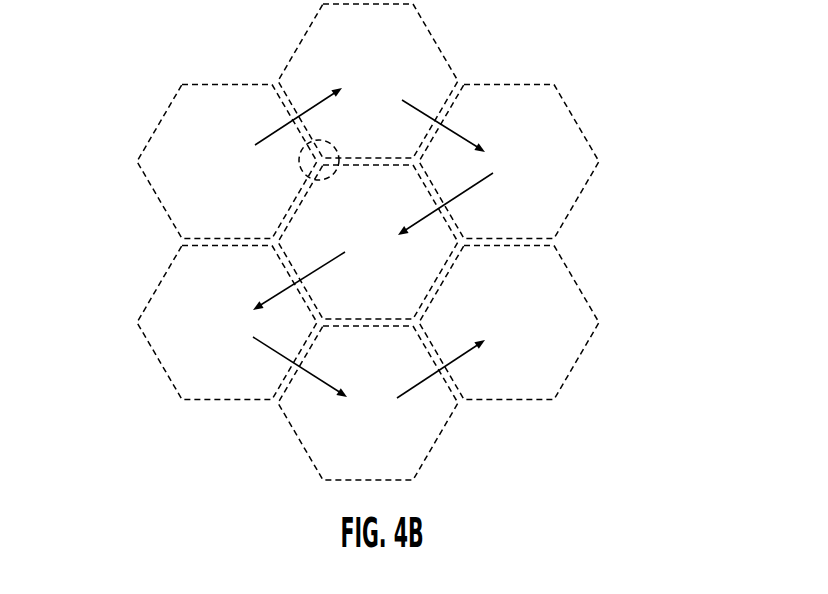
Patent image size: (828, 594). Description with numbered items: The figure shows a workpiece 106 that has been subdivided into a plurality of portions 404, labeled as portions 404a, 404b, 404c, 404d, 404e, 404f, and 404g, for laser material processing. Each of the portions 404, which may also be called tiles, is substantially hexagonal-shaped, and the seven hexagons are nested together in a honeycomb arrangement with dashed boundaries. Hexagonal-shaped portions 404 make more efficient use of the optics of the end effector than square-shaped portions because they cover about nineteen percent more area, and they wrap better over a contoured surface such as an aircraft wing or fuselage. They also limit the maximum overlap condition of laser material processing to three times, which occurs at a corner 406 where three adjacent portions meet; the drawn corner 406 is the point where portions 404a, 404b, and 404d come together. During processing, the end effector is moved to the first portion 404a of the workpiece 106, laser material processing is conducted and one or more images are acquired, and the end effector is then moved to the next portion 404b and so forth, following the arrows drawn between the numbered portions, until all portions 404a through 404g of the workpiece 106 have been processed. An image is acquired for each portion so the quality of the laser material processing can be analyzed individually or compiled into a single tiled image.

The workpiece 106 is at (642, 207).
The portions 404 is at (116, 183).
The portion 404a is at (203, 122).
The portion 404b is at (346, 42).
The portion 404c is at (484, 124).
The portion 404d is at (344, 204).
The portion 404e is at (203, 281).
The portion 404f is at (347, 359).
The portion 404g is at (482, 281).
The corner 406 is at (336, 147).